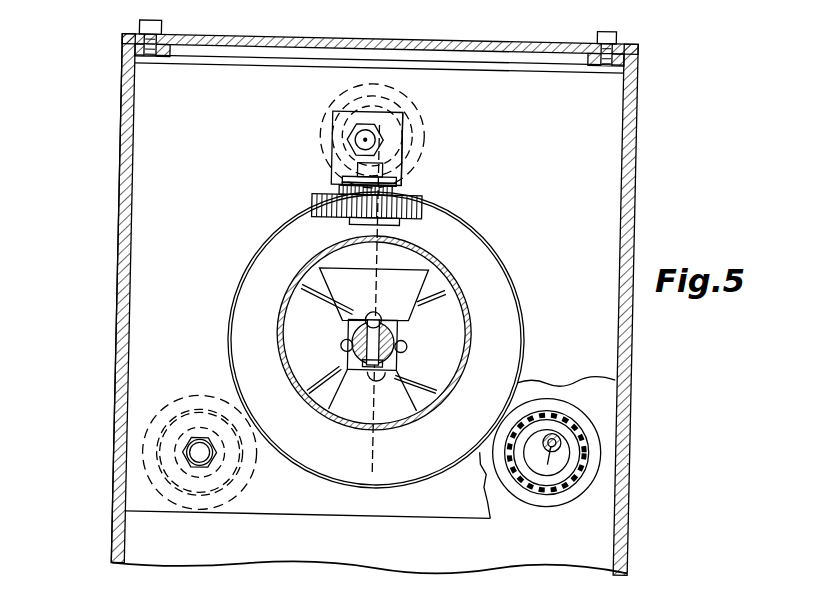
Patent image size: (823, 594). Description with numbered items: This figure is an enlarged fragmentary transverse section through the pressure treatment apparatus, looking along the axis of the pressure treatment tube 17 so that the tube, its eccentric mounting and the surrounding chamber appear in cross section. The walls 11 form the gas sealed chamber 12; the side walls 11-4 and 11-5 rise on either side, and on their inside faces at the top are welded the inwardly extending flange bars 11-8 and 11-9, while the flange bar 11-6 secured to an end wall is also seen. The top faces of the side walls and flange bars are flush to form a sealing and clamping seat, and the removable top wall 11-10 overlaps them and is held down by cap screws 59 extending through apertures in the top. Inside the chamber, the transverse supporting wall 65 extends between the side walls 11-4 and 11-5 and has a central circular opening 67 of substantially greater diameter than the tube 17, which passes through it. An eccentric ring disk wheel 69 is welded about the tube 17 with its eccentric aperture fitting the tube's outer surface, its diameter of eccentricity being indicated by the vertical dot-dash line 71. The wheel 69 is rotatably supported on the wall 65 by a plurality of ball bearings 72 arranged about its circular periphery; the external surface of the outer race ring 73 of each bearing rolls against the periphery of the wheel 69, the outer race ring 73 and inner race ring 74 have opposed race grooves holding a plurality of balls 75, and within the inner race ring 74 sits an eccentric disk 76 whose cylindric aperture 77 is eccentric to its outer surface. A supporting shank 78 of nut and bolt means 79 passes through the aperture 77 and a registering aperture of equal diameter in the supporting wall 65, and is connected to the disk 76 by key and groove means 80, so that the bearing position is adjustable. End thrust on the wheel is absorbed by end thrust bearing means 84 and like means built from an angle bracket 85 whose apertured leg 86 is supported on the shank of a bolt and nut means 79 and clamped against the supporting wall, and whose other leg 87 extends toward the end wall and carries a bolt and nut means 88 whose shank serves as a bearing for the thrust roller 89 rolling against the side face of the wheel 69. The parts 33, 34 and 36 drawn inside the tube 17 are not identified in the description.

The walls 11 is at (116, 385).
The side wall 11-4 is at (118, 415).
The side wall 11-5 is at (632, 375).
The flange bar 11-6 is at (459, 62).
The flange bar 11-8 is at (165, 62).
The flange bar 11-9 is at (587, 64).
The removable top wall 11-10 is at (339, 45).
The chamber 12 is at (307, 504).
The pressure treatment tube 17 is at (460, 293).
The hopper vane 33 is at (424, 298).
The hub 34 is at (388, 322).
The arm 36 is at (321, 397).
The cap screws 59 is at (145, 35).
The transverse supporting wall 65 is at (370, 553).
The central circular opening 67 is at (513, 390).
The eccentric ring disk wheel 69 is at (376, 340).
The vertical dot-dash line 71 is at (380, 466).
The ball bearing 72 is at (337, 91).
The outer race ring 73 is at (576, 412).
The inner race ring 74 is at (563, 474).
The balls 75 is at (588, 466).
The eccentric disk 76 is at (537, 454).
The cylindric aperture 77 is at (564, 441).
The supporting shank 78 is at (554, 434).
The nut and bolt means 79 is at (367, 137).
The key and groove means 80 is at (553, 461).
The end thrust bearing means 84 is at (402, 190).
The angle bracket 85 is at (398, 152).
The leg 86 is at (328, 131).
The other leg 87 is at (333, 185).
The bolt and nut means 88 is at (336, 222).
The thrust roller 89 is at (417, 203).